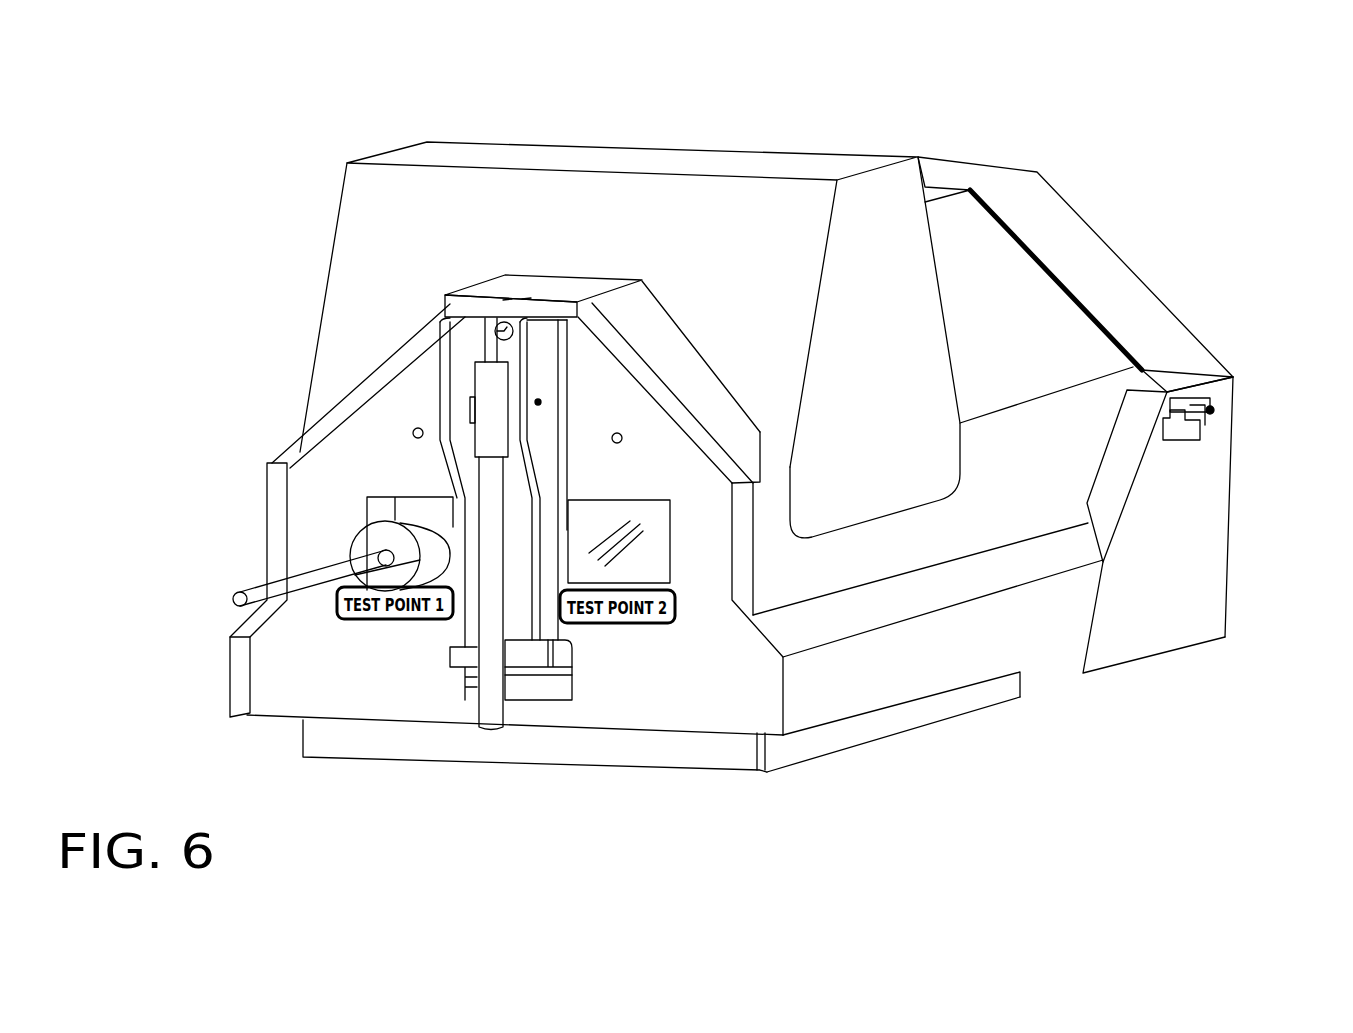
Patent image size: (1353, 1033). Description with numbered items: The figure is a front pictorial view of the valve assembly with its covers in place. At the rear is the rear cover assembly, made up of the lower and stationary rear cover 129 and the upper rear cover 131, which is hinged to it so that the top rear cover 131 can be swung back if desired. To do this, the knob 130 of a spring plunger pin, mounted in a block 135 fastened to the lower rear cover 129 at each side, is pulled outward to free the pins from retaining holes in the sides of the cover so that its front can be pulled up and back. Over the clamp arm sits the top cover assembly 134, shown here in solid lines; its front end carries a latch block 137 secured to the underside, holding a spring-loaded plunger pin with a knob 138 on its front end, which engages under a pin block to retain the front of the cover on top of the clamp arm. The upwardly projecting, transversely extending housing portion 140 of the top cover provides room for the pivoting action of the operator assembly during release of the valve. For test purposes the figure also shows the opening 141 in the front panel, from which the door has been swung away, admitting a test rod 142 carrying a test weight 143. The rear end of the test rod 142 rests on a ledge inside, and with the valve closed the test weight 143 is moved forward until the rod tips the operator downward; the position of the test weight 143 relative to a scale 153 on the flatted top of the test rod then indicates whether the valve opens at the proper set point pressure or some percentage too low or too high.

The lower rear cover 129 is at (1132, 618).
The knob 130 is at (1233, 377).
The upper rear cover 131 is at (1087, 257).
The top cover assembly 134 is at (752, 138).
The block 135 is at (1183, 435).
The latch block 137 is at (447, 293).
The knob 138 is at (482, 318).
The housing portion 140 is at (490, 155).
The opening 141 is at (367, 500).
The test rod 142 is at (335, 571).
The test weight 143 is at (372, 537).
The scale 153 is at (267, 584).